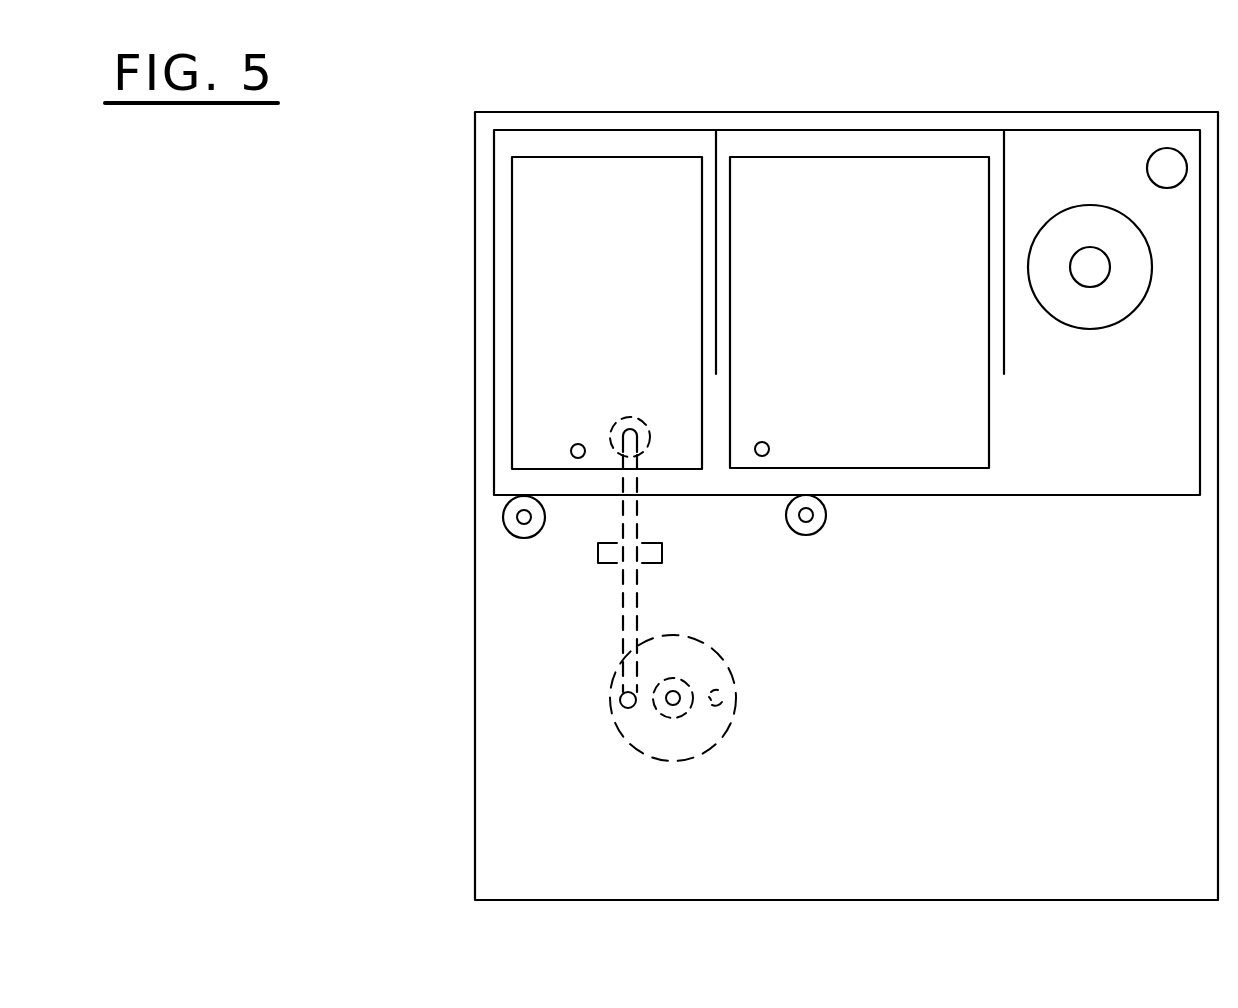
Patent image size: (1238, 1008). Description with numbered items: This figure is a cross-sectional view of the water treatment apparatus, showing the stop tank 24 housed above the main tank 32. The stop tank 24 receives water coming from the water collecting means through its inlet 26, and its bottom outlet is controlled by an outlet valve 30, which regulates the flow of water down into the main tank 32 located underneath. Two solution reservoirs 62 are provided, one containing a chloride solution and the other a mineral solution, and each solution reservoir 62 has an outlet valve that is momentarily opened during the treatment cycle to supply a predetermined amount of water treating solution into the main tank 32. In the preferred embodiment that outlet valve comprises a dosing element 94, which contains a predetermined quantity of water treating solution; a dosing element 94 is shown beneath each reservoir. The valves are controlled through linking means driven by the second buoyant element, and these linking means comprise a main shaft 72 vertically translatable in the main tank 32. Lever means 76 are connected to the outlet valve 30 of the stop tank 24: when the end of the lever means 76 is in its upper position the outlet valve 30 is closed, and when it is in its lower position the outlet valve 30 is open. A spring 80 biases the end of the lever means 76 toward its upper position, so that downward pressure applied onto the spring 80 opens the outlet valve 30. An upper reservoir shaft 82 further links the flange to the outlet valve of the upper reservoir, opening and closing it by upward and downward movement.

The stop tank 24 is at (1128, 418).
The inlet 26 is at (1088, 256).
The outlet valve 30 is at (619, 417).
The main tank 32 is at (1108, 699).
The solution reservoir 62 is at (760, 165).
The main shaft 72 is at (676, 706).
The lever means 76 is at (630, 622).
The spring 80 is at (619, 705).
The upper reservoir shaft 82 is at (736, 698).
The dosing element 94 is at (521, 538).